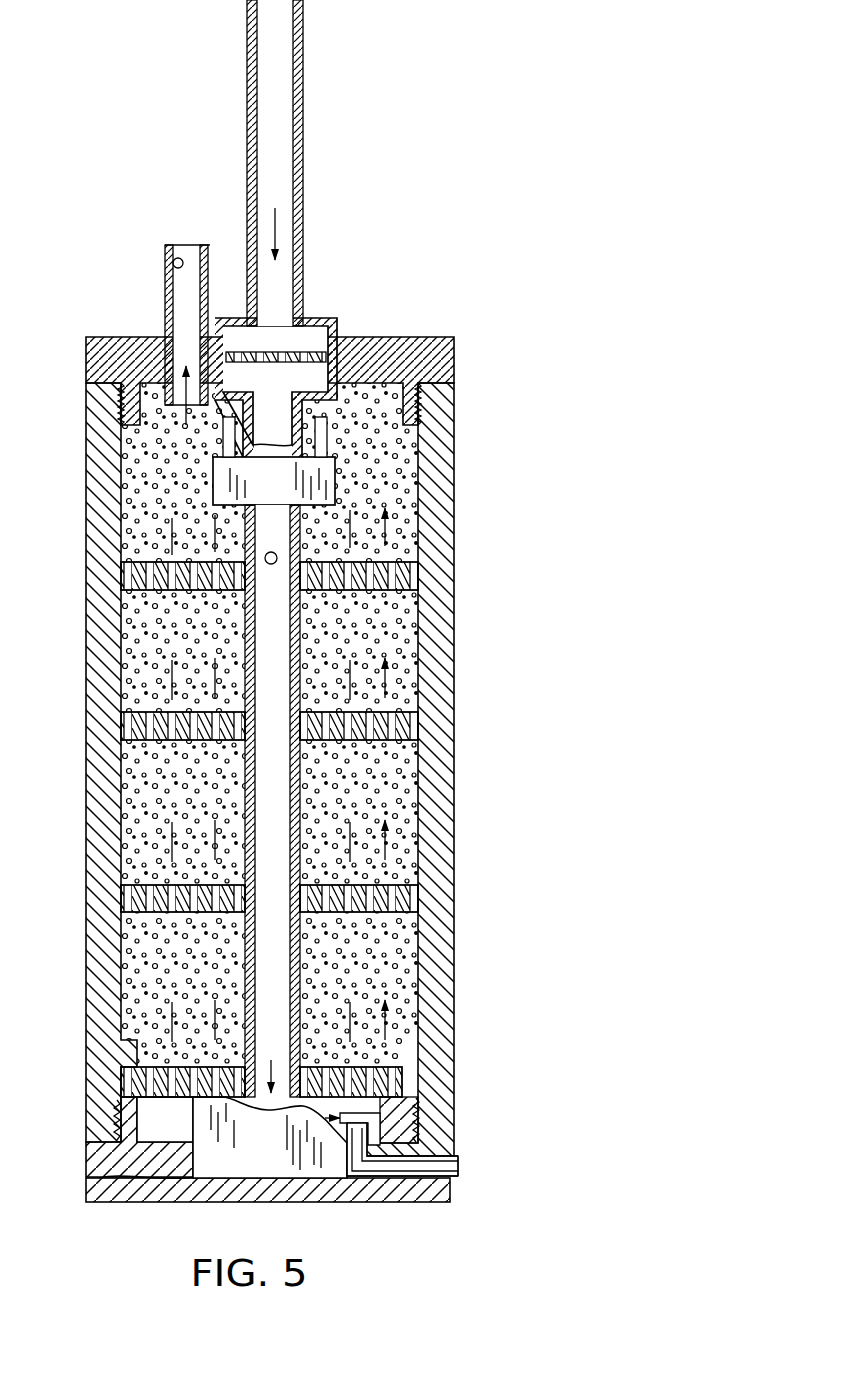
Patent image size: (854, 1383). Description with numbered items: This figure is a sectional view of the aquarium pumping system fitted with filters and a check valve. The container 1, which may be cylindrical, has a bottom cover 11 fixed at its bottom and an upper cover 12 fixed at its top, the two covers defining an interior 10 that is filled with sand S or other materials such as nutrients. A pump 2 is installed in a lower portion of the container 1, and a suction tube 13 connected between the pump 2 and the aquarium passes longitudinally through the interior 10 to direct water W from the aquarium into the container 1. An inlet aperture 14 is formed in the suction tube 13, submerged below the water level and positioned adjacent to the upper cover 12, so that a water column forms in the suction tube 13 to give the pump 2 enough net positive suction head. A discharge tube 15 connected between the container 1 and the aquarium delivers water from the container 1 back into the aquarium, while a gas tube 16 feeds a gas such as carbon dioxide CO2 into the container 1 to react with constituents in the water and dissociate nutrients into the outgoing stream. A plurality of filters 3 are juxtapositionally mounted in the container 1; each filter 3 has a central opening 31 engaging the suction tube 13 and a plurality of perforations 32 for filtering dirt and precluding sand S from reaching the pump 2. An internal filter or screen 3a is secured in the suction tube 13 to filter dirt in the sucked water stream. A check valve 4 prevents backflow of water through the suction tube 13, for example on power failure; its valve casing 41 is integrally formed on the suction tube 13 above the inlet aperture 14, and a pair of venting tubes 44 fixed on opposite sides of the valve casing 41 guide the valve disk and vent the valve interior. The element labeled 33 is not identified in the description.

The container 1 is at (455, 762).
The pump 2 is at (253, 1143).
The filter 3 is at (150, 705).
The internal filter or screen 3a is at (308, 345).
The check valve 4 is at (338, 470).
The interior 10 is at (393, 775).
The bottom cover 11 is at (380, 1202).
The upper cover 12 is at (405, 337).
The suction tube 13 is at (303, 100).
The inlet aperture 14 is at (280, 555).
The discharge tube 15 is at (166, 247).
The gas tube 16 is at (452, 1180).
The central opening 31 is at (245, 740).
The perforations 32 is at (175, 742).
The outlet connection 33 is at (160, 372).
The valve casing 41 is at (213, 505).
The venting tubes 44 is at (322, 428).
The sand S is at (392, 622).
The water W is at (285, 222).
The carbon dioxide CO2 is at (462, 1165).